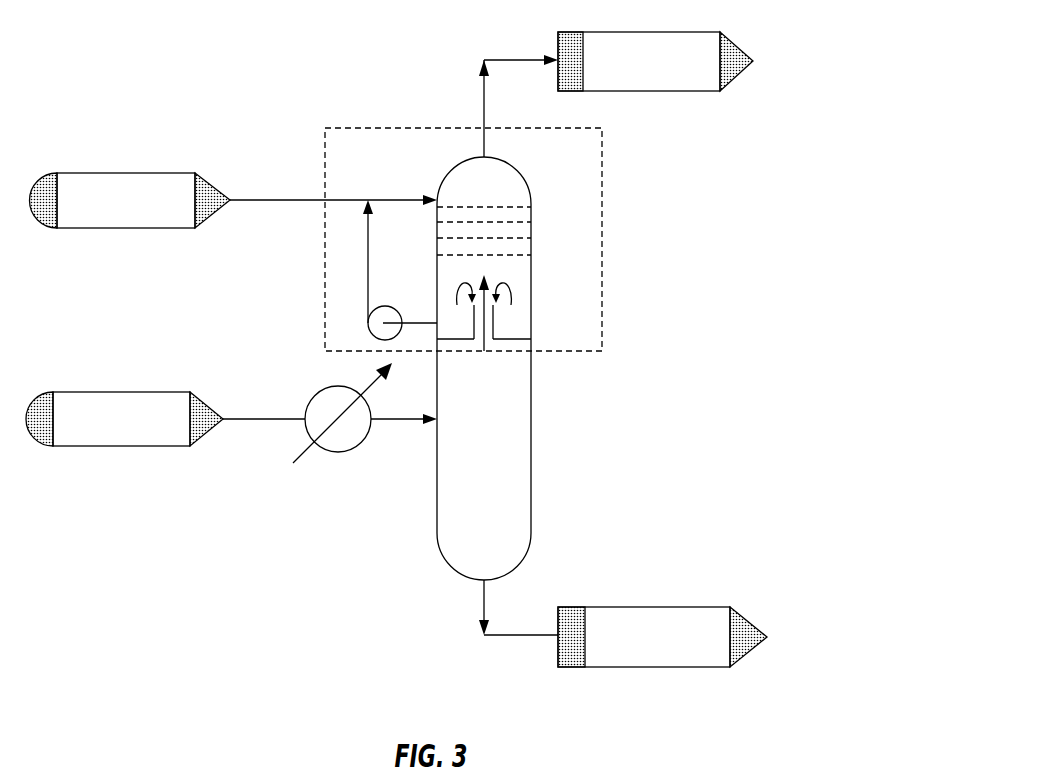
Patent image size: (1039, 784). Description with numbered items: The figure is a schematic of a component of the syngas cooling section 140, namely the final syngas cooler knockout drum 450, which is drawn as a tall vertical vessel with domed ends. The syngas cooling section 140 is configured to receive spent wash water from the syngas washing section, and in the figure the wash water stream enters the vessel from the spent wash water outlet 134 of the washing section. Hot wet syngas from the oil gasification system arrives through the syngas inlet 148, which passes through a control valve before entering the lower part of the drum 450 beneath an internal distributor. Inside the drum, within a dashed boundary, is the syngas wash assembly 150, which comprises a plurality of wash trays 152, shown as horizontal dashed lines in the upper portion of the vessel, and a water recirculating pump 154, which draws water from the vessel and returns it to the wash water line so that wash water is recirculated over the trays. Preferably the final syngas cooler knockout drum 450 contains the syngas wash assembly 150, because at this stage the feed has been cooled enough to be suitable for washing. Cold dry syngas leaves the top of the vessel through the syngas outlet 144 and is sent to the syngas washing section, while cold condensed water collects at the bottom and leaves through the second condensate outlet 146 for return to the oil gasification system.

The syngas cooling section 140 is at (722, 286).
The spent wash water outlet 134 is at (435, 198).
The syngas outlet 144 is at (485, 148).
The second condensate outlet 146 is at (481, 585).
The syngas inlet 148 is at (435, 425).
The syngas wash assembly 150 is at (602, 210).
The wash trays 152 is at (531, 207).
The water recirculating pump 154 is at (380, 331).
The final syngas cooler knockout drum 450 is at (513, 450).